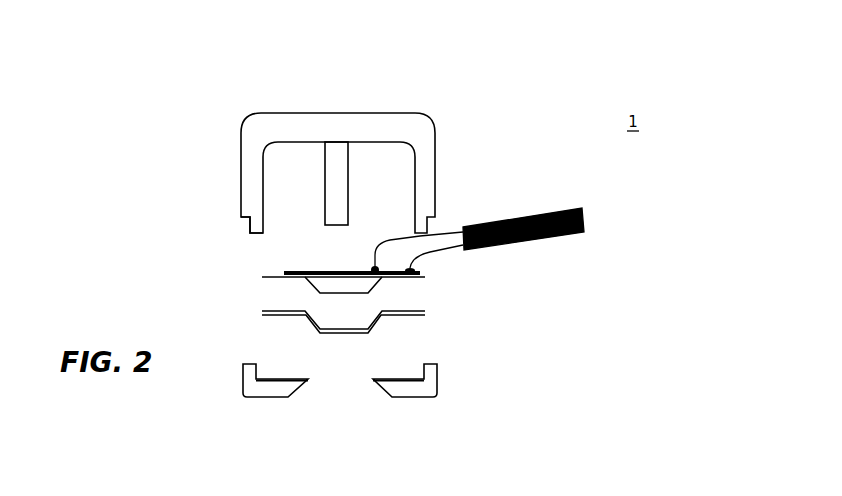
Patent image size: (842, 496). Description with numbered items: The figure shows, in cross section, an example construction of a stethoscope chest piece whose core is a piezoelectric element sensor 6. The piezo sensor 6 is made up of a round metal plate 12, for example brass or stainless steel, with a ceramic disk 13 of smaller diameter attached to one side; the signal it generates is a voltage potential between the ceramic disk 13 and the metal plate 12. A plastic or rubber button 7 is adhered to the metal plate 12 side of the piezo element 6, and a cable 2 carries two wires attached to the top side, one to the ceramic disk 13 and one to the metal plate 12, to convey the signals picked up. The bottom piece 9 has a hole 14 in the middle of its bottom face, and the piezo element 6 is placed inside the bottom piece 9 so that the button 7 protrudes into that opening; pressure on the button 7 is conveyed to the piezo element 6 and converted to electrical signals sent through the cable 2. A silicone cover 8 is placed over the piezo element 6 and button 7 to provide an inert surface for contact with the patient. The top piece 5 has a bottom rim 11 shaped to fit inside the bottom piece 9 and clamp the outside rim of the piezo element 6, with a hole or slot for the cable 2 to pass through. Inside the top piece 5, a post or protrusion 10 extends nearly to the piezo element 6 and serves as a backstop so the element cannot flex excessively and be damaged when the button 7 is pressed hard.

The cable 2 is at (557, 243).
The top piece 5 is at (233, 137).
The piezoelectric element sensor 6 is at (260, 270).
The button 7 is at (305, 290).
The silicone cover 8 is at (432, 317).
The bottom piece 9 is at (447, 382).
The post or protrusion 10 is at (353, 183).
The bottom rim 11 is at (247, 227).
The metal plate 12 is at (418, 280).
The ceramic disk 13 is at (315, 263).
The hole 14 is at (348, 395).